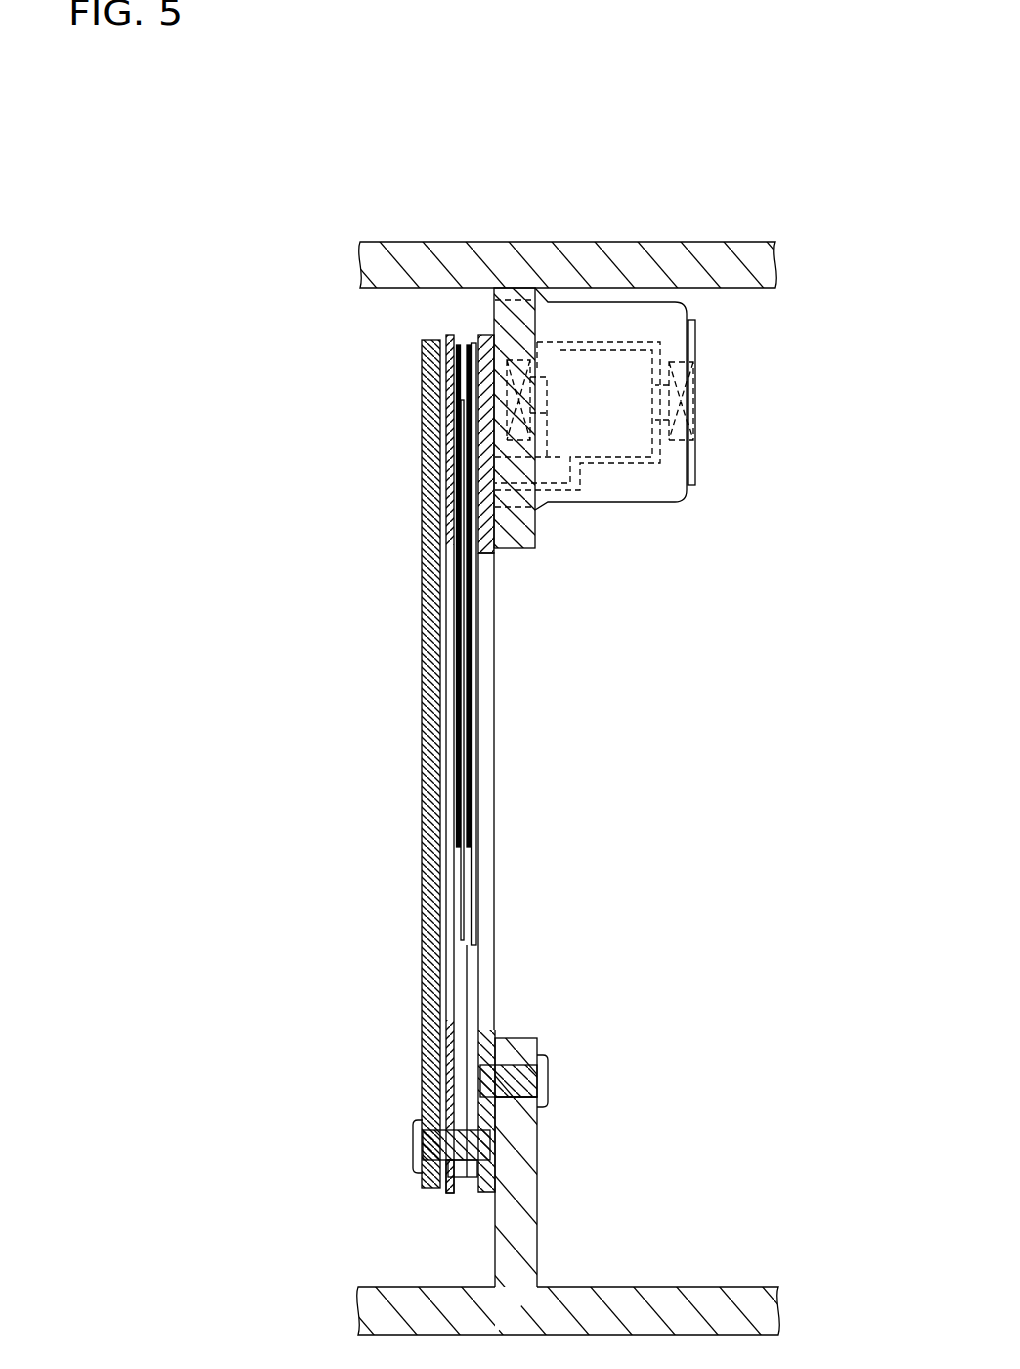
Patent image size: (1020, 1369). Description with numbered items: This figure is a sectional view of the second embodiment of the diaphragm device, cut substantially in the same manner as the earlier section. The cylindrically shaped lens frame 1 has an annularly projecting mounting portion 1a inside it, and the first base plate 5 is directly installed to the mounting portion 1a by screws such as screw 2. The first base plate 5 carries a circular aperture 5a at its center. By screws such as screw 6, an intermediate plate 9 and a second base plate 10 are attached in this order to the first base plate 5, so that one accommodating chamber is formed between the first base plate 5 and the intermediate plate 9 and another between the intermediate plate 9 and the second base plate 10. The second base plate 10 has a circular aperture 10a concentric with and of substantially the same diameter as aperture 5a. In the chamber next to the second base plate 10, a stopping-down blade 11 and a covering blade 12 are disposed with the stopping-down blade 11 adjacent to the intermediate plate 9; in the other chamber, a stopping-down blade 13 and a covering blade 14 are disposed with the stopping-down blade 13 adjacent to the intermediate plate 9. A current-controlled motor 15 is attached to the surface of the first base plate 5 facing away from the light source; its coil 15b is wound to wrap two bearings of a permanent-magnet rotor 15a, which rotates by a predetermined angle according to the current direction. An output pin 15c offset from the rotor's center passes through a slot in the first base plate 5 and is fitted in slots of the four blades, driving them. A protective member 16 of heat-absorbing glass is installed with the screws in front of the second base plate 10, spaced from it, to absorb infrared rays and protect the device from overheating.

The lens frame 1 is at (707, 1312).
The mounting portion 1a is at (525, 1228).
The screw 2 is at (543, 1078).
The first base plate 5 is at (482, 1205).
The circular aperture 5a is at (493, 800).
The screw 6 is at (415, 1136).
The intermediate plate 9 is at (467, 1180).
The second base plate 10 is at (446, 1193).
The circular aperture 10a is at (446, 740).
The stopping-down blade 11 is at (462, 878).
The covering blade 12 is at (458, 676).
The stopping-down blade 13 is at (478, 883).
The covering blade 14 is at (492, 733).
The motor 15 is at (719, 492).
The rotor 15a is at (622, 440).
The coil 15b is at (518, 355).
The output pin 15c is at (546, 510).
The protective member 16 is at (432, 527).